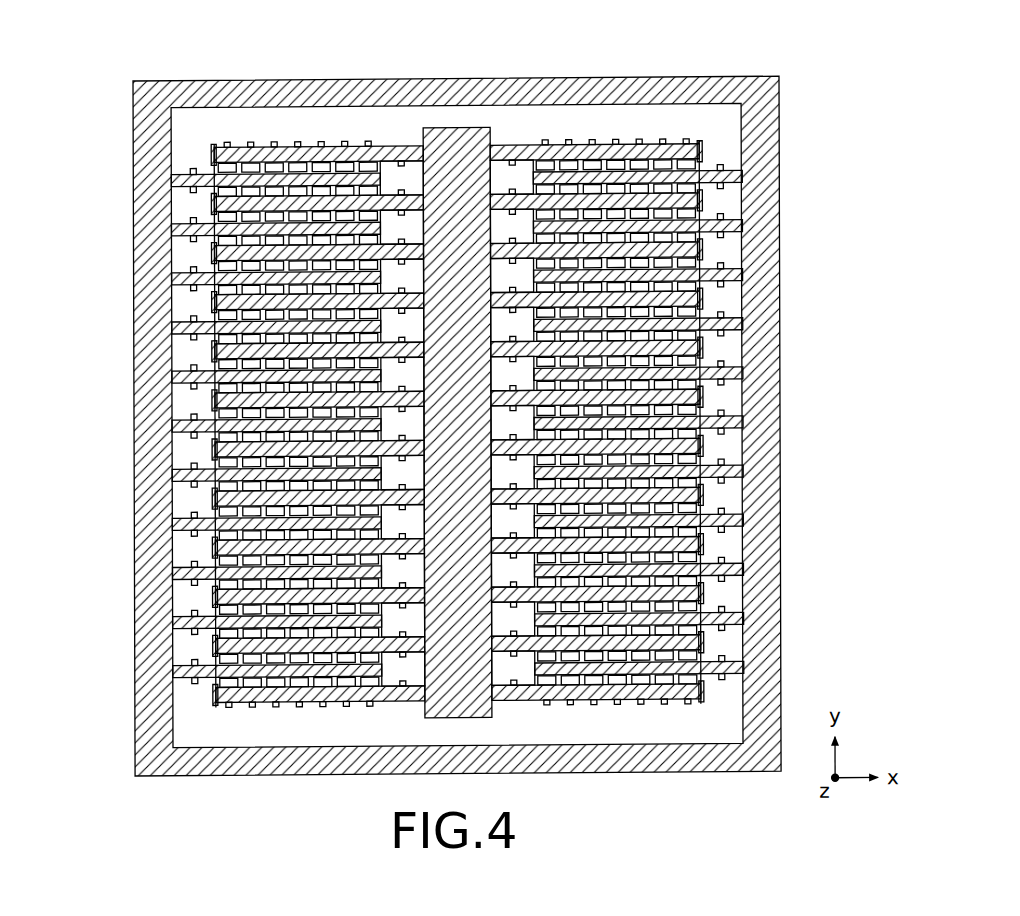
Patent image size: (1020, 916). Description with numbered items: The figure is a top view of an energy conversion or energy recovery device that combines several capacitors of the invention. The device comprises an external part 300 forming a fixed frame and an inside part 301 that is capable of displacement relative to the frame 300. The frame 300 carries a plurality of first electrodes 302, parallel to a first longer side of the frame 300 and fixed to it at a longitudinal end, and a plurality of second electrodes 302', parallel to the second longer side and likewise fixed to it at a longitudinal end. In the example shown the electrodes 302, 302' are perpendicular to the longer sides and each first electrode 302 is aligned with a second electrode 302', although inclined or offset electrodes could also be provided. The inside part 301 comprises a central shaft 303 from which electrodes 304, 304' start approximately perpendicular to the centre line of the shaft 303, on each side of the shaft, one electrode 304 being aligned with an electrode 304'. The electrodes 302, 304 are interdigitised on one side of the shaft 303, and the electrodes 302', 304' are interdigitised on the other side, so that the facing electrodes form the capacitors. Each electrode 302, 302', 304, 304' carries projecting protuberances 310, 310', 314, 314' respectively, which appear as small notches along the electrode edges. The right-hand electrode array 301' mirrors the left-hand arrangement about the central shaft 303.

The external part 300 is at (531, 64).
The inside part 301 is at (319, 356).
The central shaft 303 is at (455, 137).
The first electrodes 302 is at (203, 426).
The electrodes 304 is at (244, 425).
The projecting protuberances 310 is at (130, 427).
The projecting protuberances 314 is at (167, 374).
The second electrodes 302' is at (712, 422).
The electrodes 304' is at (673, 422).
The projecting protuberances 310' is at (786, 422).
The projecting protuberances 314' is at (776, 421).
The electrode array (right side) 301' is at (595, 422).